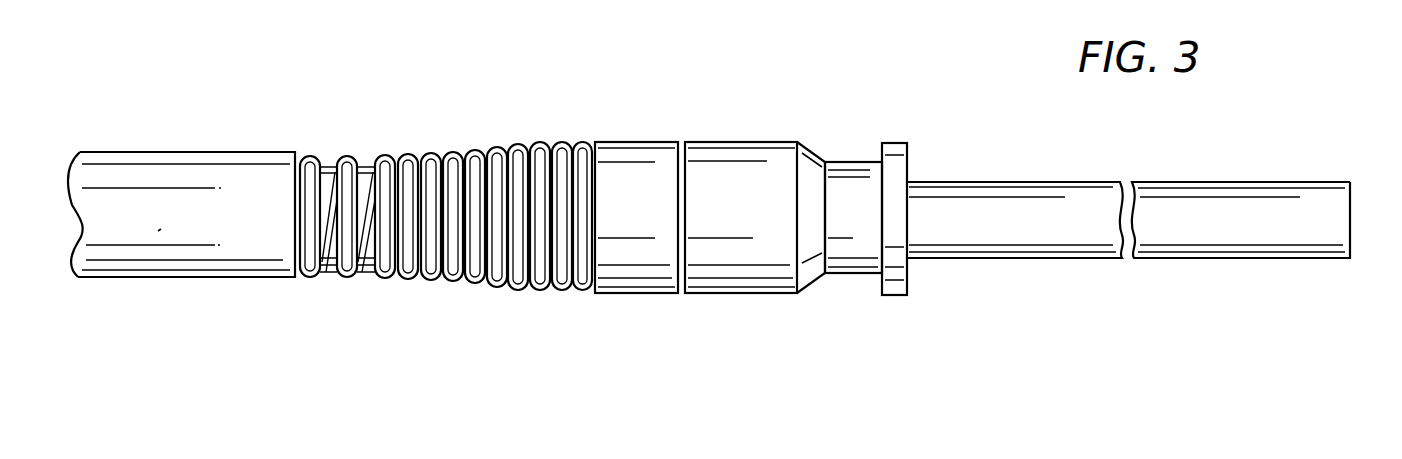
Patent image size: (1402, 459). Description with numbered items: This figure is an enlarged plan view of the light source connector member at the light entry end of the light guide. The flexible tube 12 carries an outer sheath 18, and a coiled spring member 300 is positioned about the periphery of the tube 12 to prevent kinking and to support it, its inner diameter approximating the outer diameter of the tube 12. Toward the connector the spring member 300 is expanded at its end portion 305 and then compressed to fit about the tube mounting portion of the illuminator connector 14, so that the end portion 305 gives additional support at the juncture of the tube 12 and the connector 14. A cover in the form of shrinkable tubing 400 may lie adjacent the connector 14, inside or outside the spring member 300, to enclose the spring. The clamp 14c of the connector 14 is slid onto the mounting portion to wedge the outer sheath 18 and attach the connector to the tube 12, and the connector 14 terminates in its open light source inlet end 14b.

The tube 12 is at (178, 132).
The shrinkable tubing 400 is at (247, 198).
The coiled spring member 300 is at (320, 291).
The outer sheath 18 is at (363, 168).
The spring end portion 305 is at (457, 287).
The illuminator connector 14 is at (723, 129).
The clamp 14c is at (633, 257).
The light source inlet end 14b is at (1267, 200).